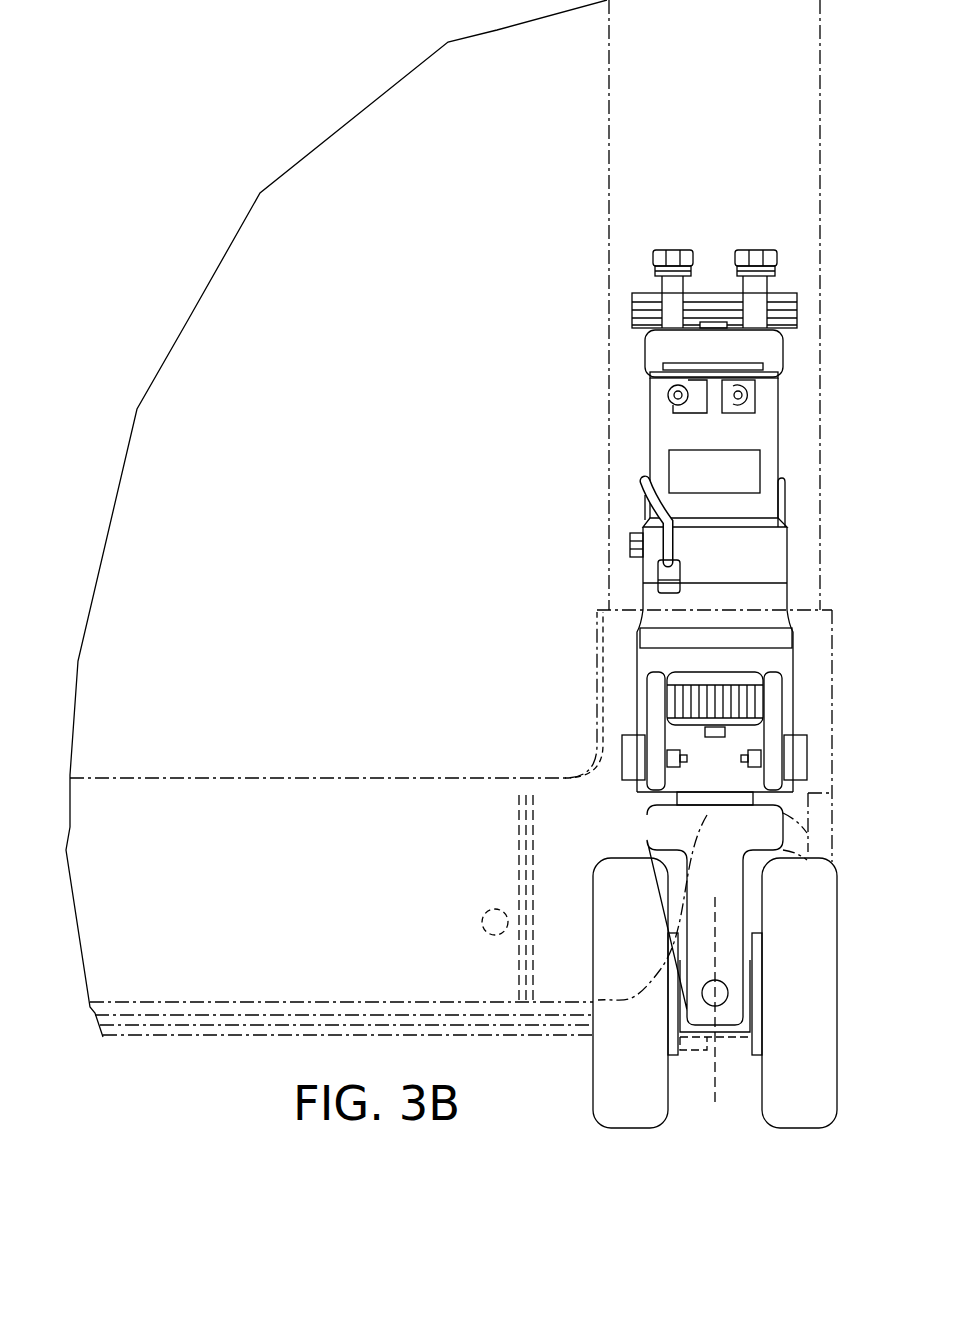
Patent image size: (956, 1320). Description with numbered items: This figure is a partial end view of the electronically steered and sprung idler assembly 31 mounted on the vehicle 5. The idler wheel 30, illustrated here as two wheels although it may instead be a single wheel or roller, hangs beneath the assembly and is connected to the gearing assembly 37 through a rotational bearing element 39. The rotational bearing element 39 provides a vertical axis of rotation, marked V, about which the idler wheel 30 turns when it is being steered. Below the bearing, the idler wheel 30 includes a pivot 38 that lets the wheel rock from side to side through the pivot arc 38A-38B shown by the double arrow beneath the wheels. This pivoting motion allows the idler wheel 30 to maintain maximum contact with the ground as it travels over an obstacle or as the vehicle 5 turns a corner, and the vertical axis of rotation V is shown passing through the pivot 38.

The vehicle 5 is at (353, 118).
The idler wheel 30 is at (683, 988).
The electronically steered and sprung idler assembly 31 is at (678, 534).
The gearing assembly 37 is at (765, 694).
The pivot 38 is at (728, 992).
The pivot arc 38A is at (775, 1157).
The pivot arc 38B is at (798, 1156).
The rotational bearing element 39 is at (670, 798).